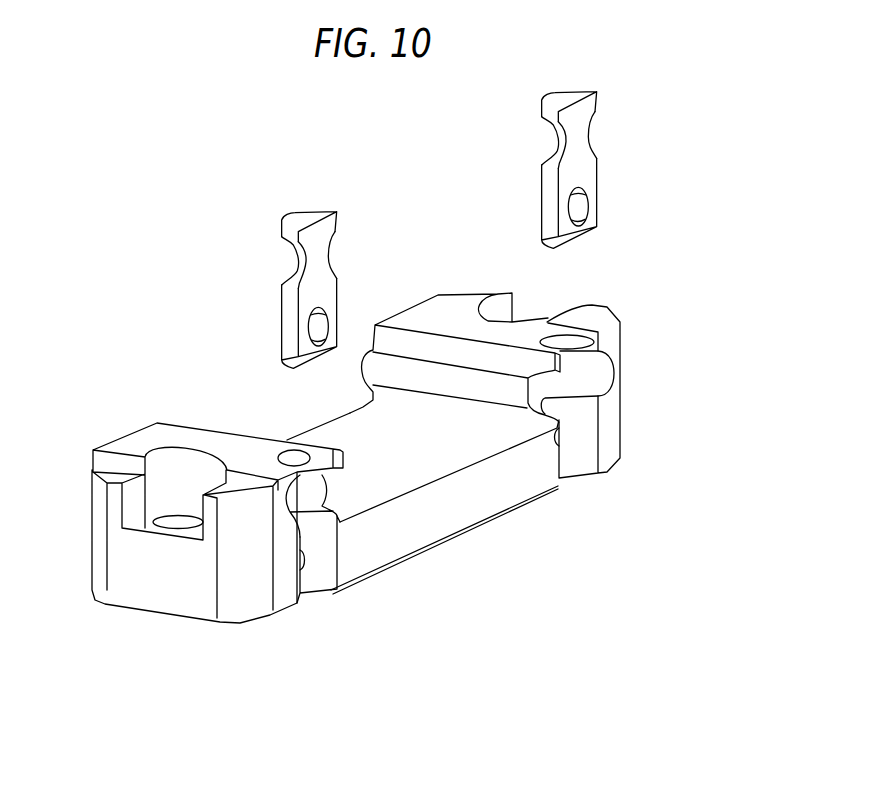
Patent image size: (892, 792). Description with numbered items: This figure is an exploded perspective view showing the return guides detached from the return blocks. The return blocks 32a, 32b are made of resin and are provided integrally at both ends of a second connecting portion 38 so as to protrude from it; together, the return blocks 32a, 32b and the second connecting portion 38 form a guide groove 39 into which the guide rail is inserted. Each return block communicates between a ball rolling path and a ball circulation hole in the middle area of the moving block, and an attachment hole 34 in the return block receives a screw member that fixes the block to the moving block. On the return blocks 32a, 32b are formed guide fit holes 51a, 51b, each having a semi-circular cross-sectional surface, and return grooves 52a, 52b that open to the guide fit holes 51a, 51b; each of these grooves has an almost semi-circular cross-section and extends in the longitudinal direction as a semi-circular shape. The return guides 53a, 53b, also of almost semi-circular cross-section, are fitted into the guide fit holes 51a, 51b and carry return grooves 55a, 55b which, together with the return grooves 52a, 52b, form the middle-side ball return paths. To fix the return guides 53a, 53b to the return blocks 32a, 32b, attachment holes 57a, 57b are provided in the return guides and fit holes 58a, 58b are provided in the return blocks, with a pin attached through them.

The return block 32a is at (146, 443).
The return block 32b is at (432, 312).
The attachment hole 34 is at (187, 520).
The second connecting portion 38 is at (463, 508).
The guide groove 39 is at (465, 440).
The guide fit hole 51a is at (323, 573).
The guide fit hole 51b is at (585, 421).
The return groove 52a is at (298, 497).
The return groove 52b is at (580, 370).
The return guide 53a is at (258, 290).
The return guide 53b is at (555, 170).
The return groove 55a is at (298, 262).
The return groove 55b is at (558, 142).
The attachment hole 57a is at (313, 328).
The attachment hole 57b is at (578, 207).
The fit hole 58a is at (302, 563).
The fit hole 58b is at (565, 444).